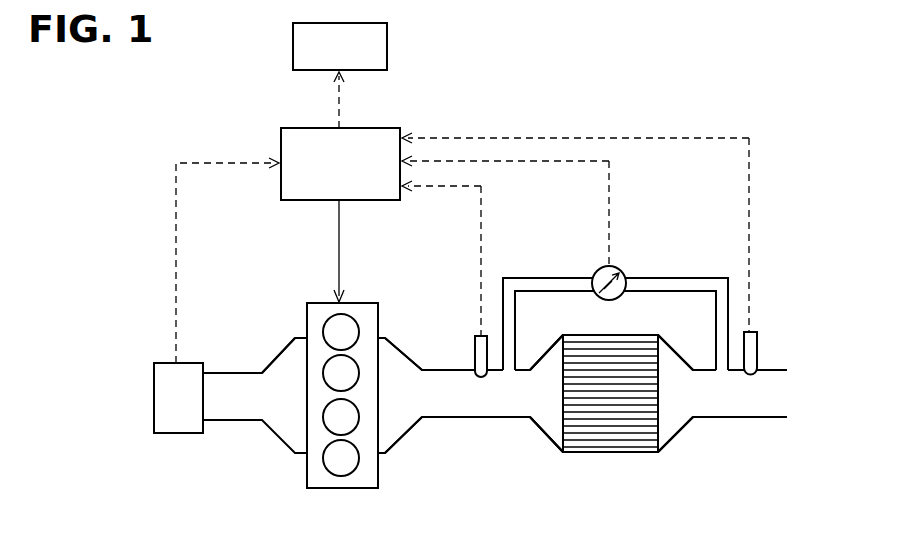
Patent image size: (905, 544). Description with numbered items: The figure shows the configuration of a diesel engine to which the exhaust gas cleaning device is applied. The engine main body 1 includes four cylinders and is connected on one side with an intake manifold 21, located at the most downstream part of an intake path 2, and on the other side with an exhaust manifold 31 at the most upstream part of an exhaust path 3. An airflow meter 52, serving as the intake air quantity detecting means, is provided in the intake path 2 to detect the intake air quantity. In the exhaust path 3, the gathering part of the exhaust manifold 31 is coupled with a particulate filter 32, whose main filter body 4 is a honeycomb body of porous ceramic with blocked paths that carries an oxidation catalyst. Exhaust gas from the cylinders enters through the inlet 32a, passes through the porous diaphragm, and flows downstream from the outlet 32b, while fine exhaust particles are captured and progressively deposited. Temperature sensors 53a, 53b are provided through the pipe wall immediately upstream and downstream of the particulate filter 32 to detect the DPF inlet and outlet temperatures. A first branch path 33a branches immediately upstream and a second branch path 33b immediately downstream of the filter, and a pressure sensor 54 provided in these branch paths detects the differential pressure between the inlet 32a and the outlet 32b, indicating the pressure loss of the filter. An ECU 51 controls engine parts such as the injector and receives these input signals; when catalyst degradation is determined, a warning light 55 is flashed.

The engine main body 1 is at (321, 302).
The intake path 2 is at (255, 355).
The intake manifold 21 is at (278, 365).
The exhaust path 3 is at (474, 438).
The exhaust manifold 31 is at (386, 365).
The particulate filter 32 is at (681, 444).
The inlet 32a is at (530, 397).
The outlet 32b is at (693, 390).
The first branch path 33a is at (562, 278).
The second branch path 33b is at (690, 278).
The main filter body 4 is at (605, 452).
The ECU 51 is at (300, 128).
The airflow meter 52 is at (176, 433).
The temperature sensor 53a is at (473, 355).
The temperature sensor 53b is at (760, 345).
The pressure sensor 54 is at (620, 272).
The warning light 55 is at (293, 45).